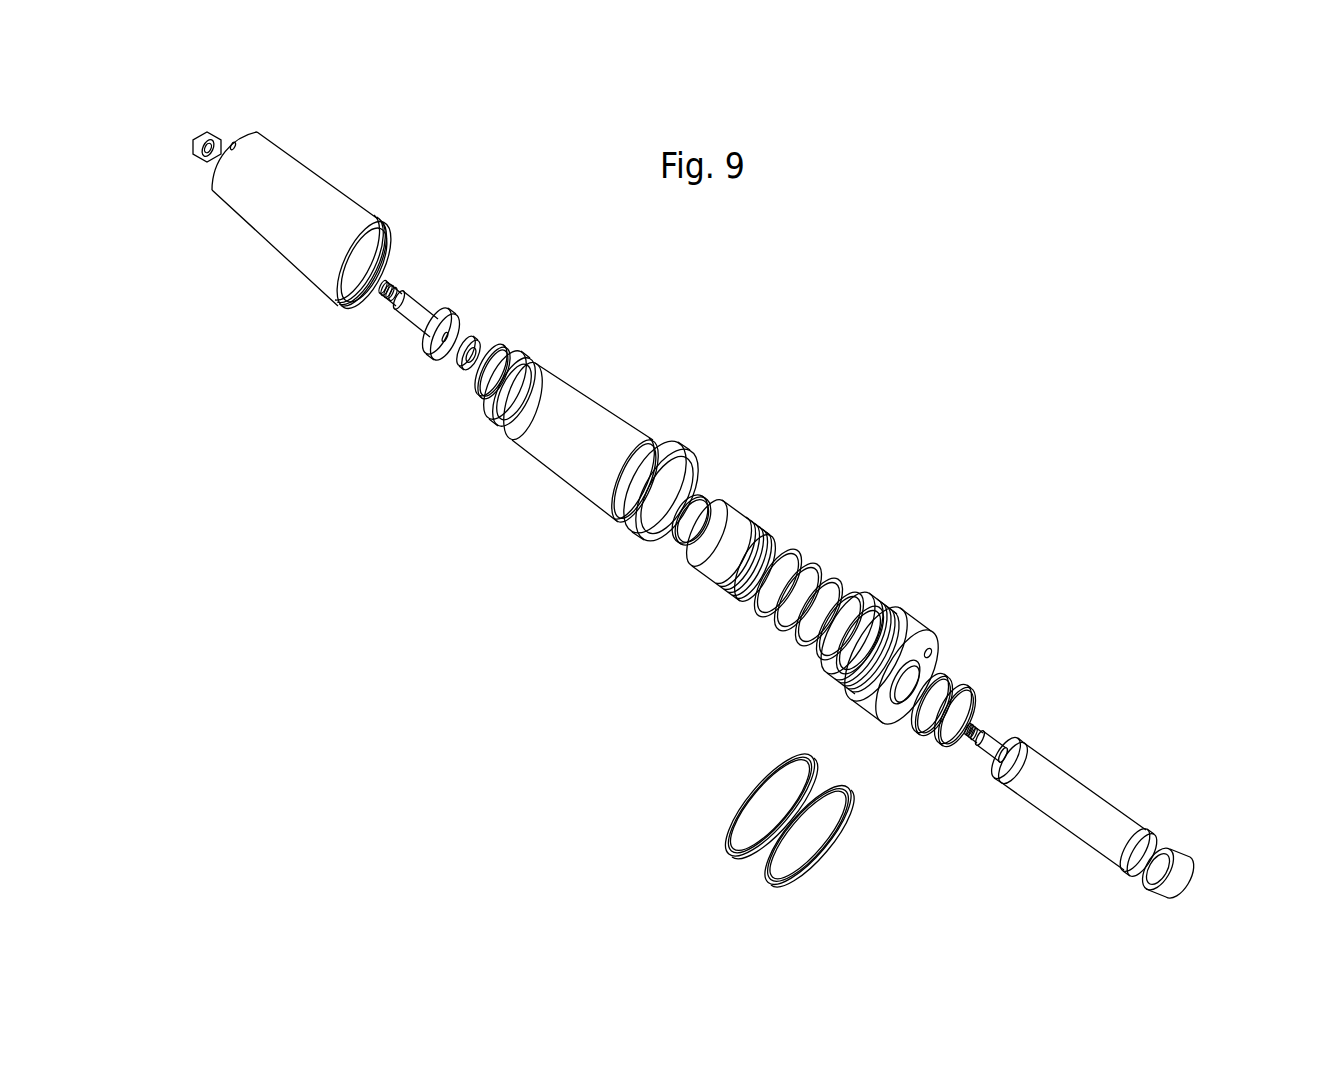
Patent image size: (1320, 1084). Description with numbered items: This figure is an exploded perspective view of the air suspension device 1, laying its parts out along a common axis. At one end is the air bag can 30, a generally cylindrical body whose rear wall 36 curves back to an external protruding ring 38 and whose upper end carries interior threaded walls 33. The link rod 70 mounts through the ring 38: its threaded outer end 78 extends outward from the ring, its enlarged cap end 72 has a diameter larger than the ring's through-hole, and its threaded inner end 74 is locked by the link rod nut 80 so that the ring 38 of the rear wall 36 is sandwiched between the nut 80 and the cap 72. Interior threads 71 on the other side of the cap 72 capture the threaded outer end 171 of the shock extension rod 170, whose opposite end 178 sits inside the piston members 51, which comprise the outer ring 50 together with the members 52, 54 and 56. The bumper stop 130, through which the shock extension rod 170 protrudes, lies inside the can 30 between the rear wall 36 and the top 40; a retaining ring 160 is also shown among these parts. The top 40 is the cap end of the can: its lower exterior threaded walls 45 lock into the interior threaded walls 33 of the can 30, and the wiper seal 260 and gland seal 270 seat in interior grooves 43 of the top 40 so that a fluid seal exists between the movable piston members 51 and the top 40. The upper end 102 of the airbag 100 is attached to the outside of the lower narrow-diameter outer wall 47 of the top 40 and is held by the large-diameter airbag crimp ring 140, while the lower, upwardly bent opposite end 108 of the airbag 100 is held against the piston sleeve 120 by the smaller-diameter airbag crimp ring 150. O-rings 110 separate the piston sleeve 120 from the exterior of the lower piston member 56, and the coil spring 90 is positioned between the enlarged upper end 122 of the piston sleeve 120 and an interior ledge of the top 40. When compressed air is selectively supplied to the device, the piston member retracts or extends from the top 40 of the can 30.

The air suspension device 1 is at (872, 331).
The air bag can 30 is at (307, 221).
The interior threaded walls 33 is at (345, 286).
The rear wall 36 is at (227, 204).
The external protruding ring 38 is at (264, 123).
The link rod nut 80 is at (233, 117).
The link rod 70 is at (455, 273).
The enlarged cap end 72 is at (483, 300).
The threaded inner end 74 is at (378, 359).
The threaded outer end 78 is at (423, 248).
The interior threads 71 is at (514, 319).
The bumper stop 130 is at (429, 378).
The retaining ring 160 is at (528, 354).
The airbag crimp ring #2 150 is at (481, 403).
The airbag 100 is at (592, 442).
The upper end of airbag 102 is at (606, 507).
The inner opposite end of airbag 108 is at (487, 427).
The airbag crimp ring #1 140 is at (680, 485).
The O-ring 110 is at (733, 504).
The piston sleeve 120 is at (704, 555).
The enlarged upper end 122 is at (713, 586).
The coil spring 90 is at (819, 605).
The top cap end 40 is at (881, 674).
The interior grooves 43 is at (975, 614).
The lower exterior threaded walls 45 is at (926, 630).
The lower narrow diameter outer wall 47 is at (830, 651).
The gland seal 270 is at (982, 672).
The wiper seal 260 is at (999, 704).
The shock extension rod 170 is at (955, 767).
The threaded outer end 171 is at (1019, 714).
The opposite end 178 is at (962, 793).
The piston members 51 is at (1130, 719).
The piston member 54 is at (1082, 806).
The lower piston member 56 is at (1041, 754).
The piston member 52 is at (1166, 844).
The outer ring 50 is at (1182, 885).